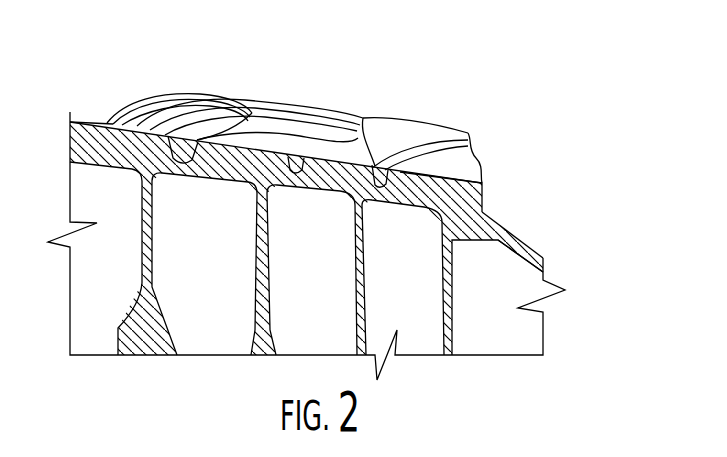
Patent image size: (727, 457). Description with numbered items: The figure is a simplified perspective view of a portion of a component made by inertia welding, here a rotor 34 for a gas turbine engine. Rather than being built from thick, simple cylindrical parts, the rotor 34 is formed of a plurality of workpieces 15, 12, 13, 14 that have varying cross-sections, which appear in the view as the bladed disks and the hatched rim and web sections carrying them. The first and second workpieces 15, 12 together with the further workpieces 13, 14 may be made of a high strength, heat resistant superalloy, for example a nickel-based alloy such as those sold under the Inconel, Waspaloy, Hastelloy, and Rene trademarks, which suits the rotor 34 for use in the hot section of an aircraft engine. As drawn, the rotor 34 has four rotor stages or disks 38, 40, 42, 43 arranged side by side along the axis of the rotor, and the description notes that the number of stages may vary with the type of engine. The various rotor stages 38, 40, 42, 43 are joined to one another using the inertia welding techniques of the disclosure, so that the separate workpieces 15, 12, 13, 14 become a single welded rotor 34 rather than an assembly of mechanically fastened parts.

The second workpiece 12 is at (255, 150).
The workpiece 13 is at (342, 175).
The workpiece 14 is at (495, 208).
The first workpiece 15 is at (172, 94).
The rotor 34 is at (545, 136).
The rotor stage 38 is at (100, 113).
The rotor stage 40 is at (227, 140).
The rotor stage 42 is at (330, 148).
The rotor stage 43 is at (449, 168).